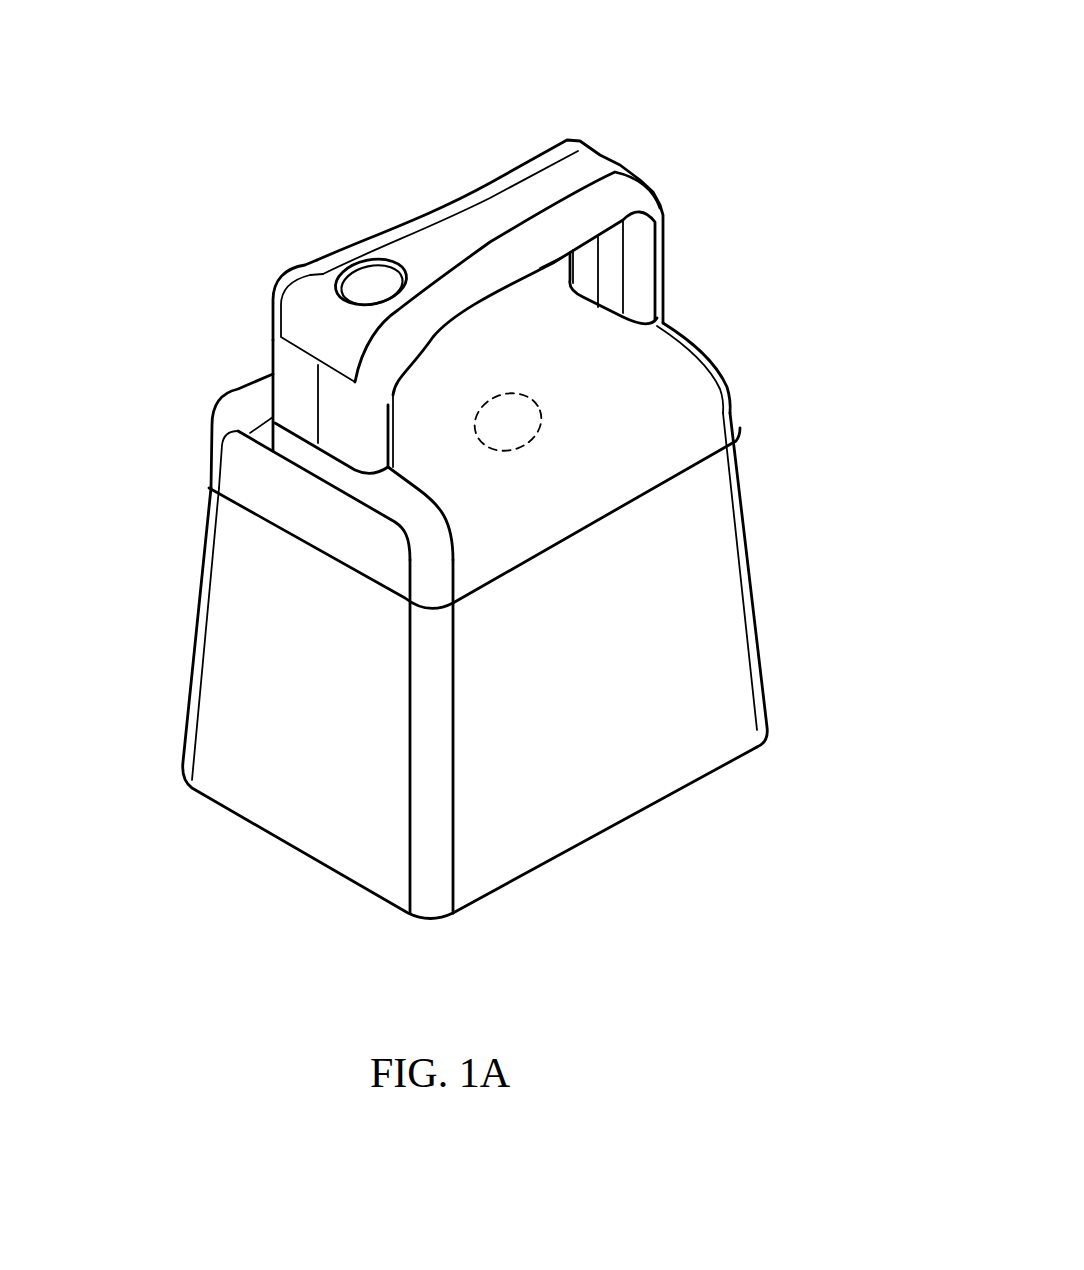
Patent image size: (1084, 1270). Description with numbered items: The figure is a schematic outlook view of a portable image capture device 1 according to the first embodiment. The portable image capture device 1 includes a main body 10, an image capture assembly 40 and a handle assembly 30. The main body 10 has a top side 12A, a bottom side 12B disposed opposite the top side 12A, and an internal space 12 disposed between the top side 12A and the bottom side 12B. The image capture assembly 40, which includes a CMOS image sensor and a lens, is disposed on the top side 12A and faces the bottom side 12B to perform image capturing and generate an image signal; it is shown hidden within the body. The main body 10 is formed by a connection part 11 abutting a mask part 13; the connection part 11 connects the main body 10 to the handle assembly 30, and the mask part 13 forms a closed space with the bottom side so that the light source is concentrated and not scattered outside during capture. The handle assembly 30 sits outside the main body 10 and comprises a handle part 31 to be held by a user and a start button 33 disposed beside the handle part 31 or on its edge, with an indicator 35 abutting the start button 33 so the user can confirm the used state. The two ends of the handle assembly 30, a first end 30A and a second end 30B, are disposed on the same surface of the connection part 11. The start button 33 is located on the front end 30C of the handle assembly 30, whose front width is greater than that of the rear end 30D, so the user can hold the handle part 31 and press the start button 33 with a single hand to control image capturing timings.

The portable image capture device 1 is at (772, 375).
The main body 10 is at (117, 473).
The connection part 11 is at (228, 470).
The internal space 12 is at (668, 617).
The top side 12A is at (630, 507).
The bottom side 12B is at (657, 800).
The mask part 13 is at (243, 635).
The handle assembly 30 is at (433, 130).
The first end 30A is at (283, 415).
The second end 30B is at (650, 313).
The front end 30C is at (300, 327).
The rear end 30D is at (570, 158).
The handle part 31 is at (463, 222).
The start button 33 is at (365, 275).
The indicator 35 is at (343, 288).
The image capture assembly 40 is at (542, 417).